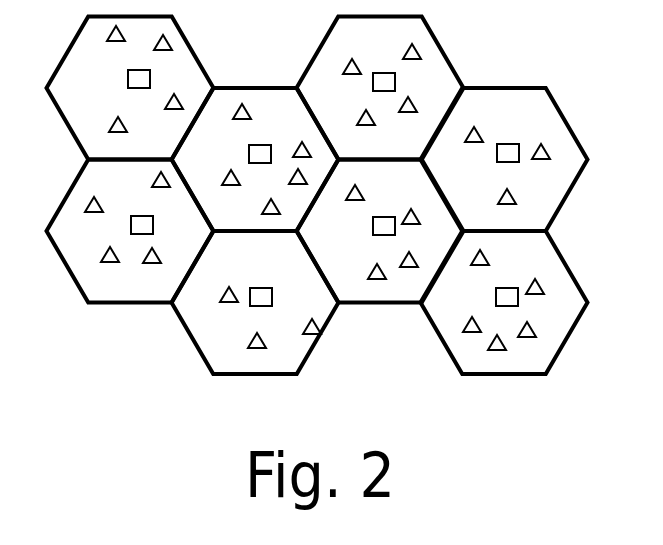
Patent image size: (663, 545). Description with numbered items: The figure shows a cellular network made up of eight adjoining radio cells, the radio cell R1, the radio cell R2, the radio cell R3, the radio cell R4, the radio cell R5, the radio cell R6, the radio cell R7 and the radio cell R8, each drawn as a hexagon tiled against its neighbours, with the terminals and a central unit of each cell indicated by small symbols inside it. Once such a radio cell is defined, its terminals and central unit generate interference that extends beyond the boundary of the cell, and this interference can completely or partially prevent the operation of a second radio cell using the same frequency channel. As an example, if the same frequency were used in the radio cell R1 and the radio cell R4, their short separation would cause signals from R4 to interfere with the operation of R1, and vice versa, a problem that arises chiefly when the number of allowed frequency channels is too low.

The radio cell R1 is at (130, 88).
The radio cell R2 is at (130, 231).
The radio cell R3 is at (255, 159).
The radio cell R4 is at (255, 302).
The radio cell R5 is at (380, 88).
The radio cell R6 is at (380, 231).
The radio cell R7 is at (504, 159).
The radio cell R8 is at (504, 302).